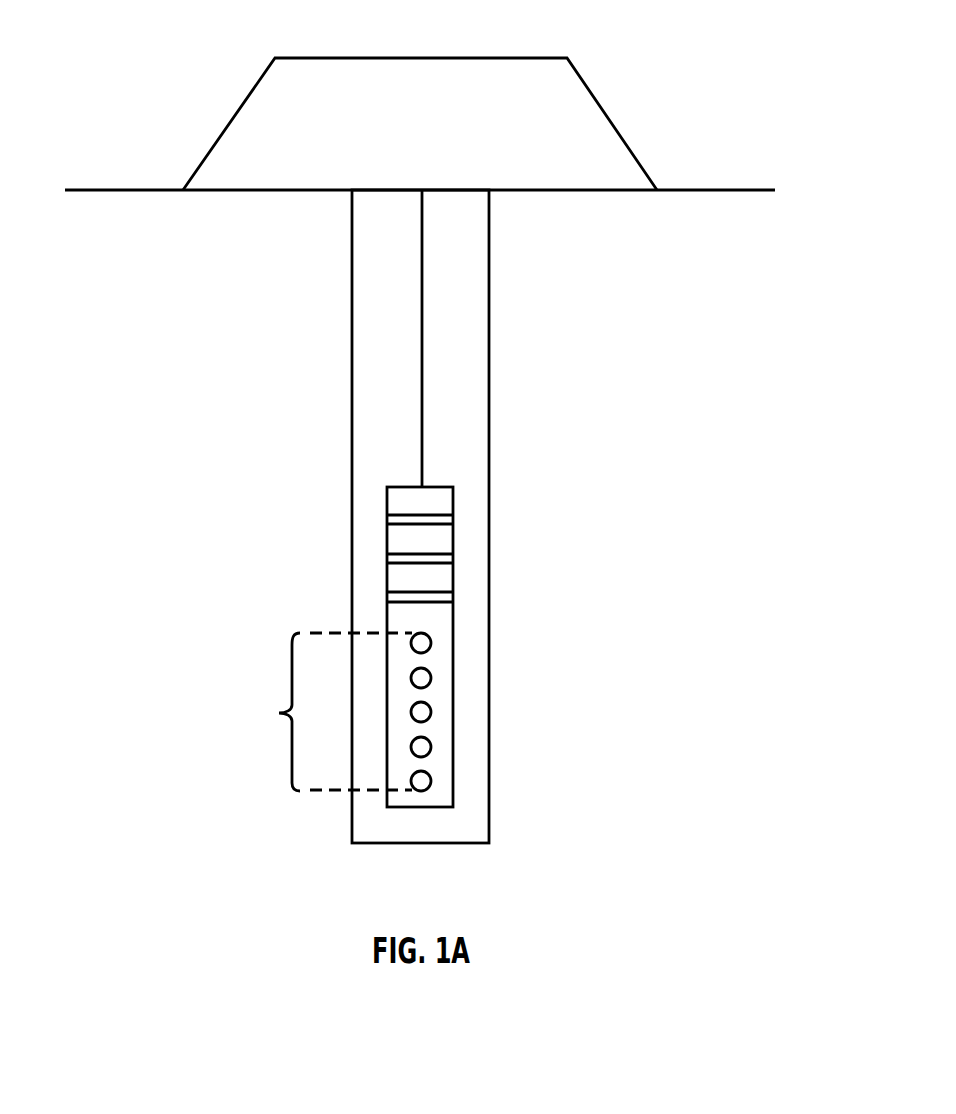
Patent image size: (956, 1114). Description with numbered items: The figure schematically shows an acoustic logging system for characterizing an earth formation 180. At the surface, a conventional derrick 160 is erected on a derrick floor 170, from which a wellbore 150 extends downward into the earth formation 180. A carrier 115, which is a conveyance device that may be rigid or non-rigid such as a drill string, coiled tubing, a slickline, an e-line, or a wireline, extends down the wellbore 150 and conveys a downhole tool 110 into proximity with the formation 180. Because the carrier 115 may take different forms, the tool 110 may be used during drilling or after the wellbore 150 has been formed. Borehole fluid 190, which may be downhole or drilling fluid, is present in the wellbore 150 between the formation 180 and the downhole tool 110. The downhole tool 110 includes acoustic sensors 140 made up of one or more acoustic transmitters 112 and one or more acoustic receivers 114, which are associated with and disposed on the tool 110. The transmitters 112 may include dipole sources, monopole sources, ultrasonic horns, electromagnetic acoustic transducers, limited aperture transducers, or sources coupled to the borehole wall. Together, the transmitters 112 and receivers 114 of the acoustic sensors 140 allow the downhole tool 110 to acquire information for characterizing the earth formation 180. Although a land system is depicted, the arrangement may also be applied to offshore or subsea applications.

The downhole tool 110 is at (403, 647).
The acoustic transmitters 112 is at (432, 781).
The acoustic receivers 114 is at (432, 712).
The carrier 115 is at (422, 358).
The acoustic sensors 140 is at (403, 712).
The wellbore 150 is at (352, 338).
The derrick 160 is at (583, 82).
The derrick floor 170 is at (227, 180).
The earth formation 180 is at (659, 474).
The borehole fluid 190 is at (408, 418).